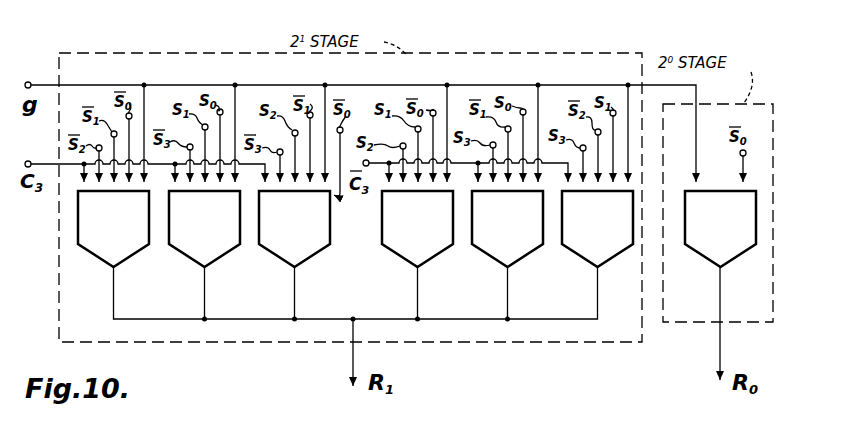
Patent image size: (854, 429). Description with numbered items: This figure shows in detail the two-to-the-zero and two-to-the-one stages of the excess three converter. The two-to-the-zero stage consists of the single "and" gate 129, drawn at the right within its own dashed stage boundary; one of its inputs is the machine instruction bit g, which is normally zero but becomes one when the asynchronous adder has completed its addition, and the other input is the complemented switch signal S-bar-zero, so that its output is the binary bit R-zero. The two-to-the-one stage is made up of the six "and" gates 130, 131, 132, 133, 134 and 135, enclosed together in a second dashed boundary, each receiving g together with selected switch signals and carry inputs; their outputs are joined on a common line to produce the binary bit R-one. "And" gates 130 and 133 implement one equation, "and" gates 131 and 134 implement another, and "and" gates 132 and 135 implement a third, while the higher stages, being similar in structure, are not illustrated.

The "and" gate 129 is at (707, 249).
The "and" gate 130 is at (108, 258).
The "and" gate 131 is at (195, 255).
The "and" gate 132 is at (290, 253).
The "and" gate 133 is at (408, 254).
The "and" gate 134 is at (495, 248).
The "and" gate 135 is at (585, 247).